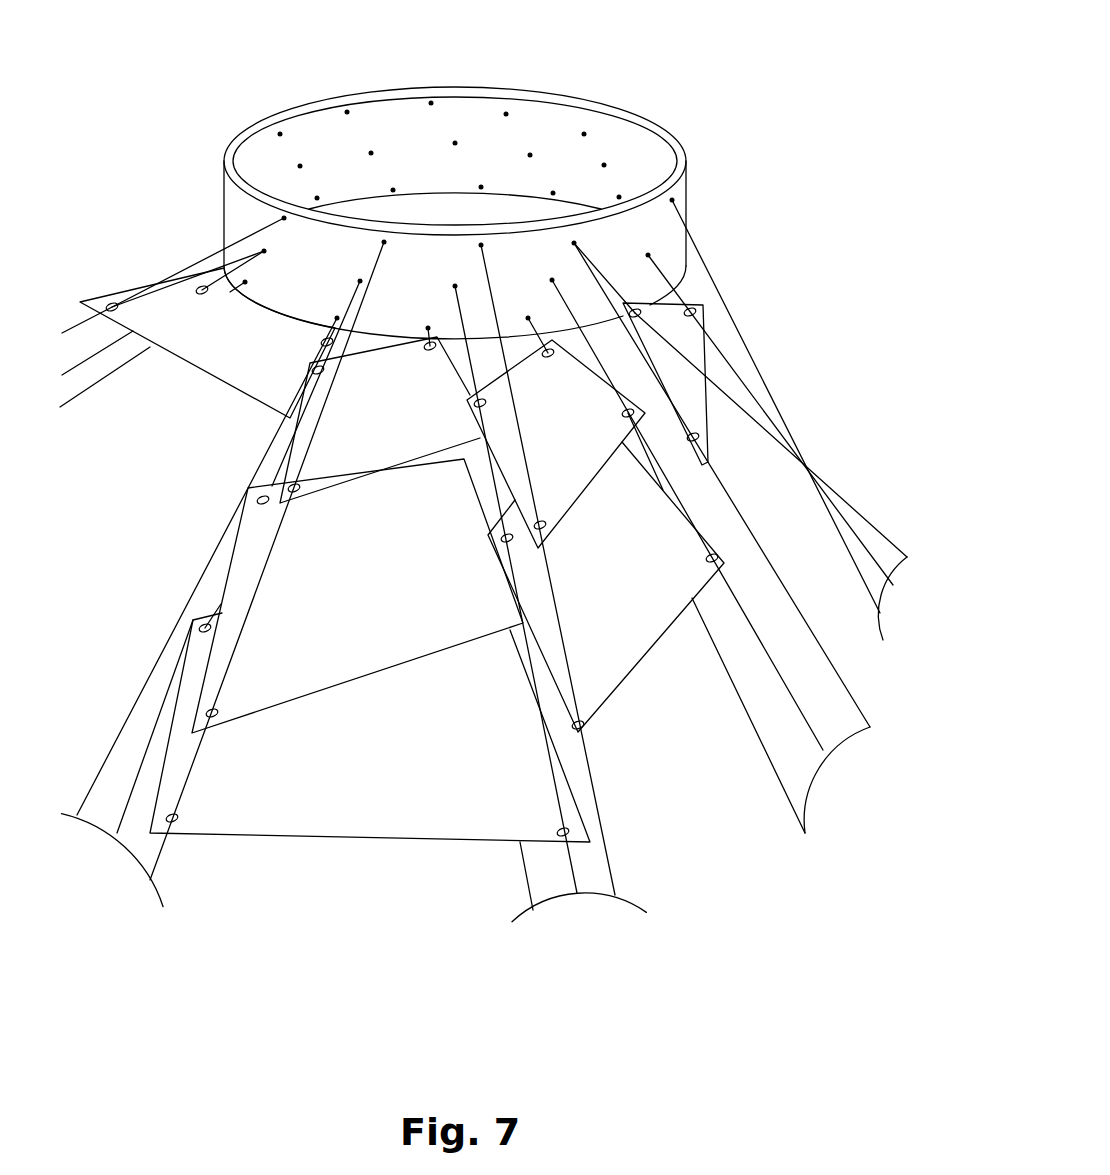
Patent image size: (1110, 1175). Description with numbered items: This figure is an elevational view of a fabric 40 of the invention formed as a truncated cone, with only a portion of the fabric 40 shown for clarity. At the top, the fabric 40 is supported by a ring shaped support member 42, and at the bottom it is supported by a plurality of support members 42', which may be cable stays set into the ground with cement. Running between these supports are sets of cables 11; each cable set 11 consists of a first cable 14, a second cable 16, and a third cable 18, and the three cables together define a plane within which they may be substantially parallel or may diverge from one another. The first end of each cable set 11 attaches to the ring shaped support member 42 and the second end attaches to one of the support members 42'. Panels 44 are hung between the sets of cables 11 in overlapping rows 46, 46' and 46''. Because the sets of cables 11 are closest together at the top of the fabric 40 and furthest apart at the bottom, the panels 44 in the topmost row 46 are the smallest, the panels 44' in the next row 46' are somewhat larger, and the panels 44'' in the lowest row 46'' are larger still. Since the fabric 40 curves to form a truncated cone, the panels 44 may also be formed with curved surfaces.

The fabric 40 is at (722, 38).
The ring shaped support member 42 is at (455, 213).
The support members 42' is at (494, 579).
The panels 44 is at (394, 408).
The panels 44' is at (458, 587).
The panels 44'' is at (370, 727).
The topmost row 46 is at (812, 331).
The row 46' is at (153, 528).
The row 46'' is at (96, 681).
The first cable 14 is at (810, 622).
The second cable 16 is at (740, 702).
The third cable 18 is at (774, 768).
The cable set 11 is at (98, 746).